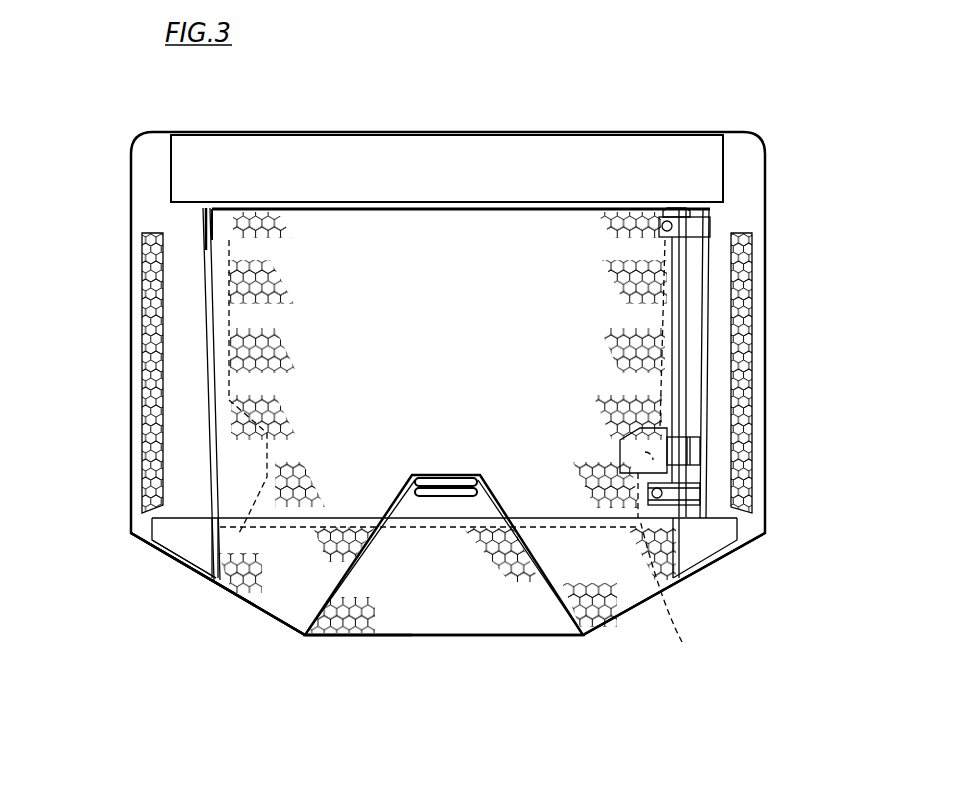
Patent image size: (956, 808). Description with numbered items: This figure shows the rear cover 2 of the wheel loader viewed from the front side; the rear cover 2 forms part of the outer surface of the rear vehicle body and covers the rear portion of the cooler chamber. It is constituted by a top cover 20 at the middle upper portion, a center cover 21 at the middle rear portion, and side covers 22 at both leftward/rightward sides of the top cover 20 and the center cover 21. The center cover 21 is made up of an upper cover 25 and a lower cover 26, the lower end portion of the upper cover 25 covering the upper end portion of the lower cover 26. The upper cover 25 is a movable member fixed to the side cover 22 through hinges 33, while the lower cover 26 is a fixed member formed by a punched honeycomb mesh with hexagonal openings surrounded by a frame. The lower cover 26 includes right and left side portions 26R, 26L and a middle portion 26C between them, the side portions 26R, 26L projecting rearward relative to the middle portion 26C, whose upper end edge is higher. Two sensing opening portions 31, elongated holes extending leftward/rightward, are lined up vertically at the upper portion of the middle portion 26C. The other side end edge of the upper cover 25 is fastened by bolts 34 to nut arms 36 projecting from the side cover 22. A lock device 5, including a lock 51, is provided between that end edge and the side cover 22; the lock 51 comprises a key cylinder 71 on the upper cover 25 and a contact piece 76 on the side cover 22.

The rear cover 2 is at (143, 93).
The top cover 20 is at (502, 133).
The center cover 21 is at (180, 630).
The side cover 22 is at (128, 208).
The upper cover 25 is at (274, 512).
The lower cover 26 is at (270, 620).
The right side portion 26R is at (300, 610).
The middle portion 26C is at (537, 620).
The left side portion 26L is at (622, 613).
The sensing opening portion 31 is at (447, 493).
The hinge 33 is at (206, 215).
The bolt 34 is at (668, 217).
The nut arm 36 is at (705, 215).
The lock device 5 is at (662, 418).
The lock 51 is at (643, 450).
The key cylinder 71 is at (666, 597).
The contact piece 76 is at (700, 452).